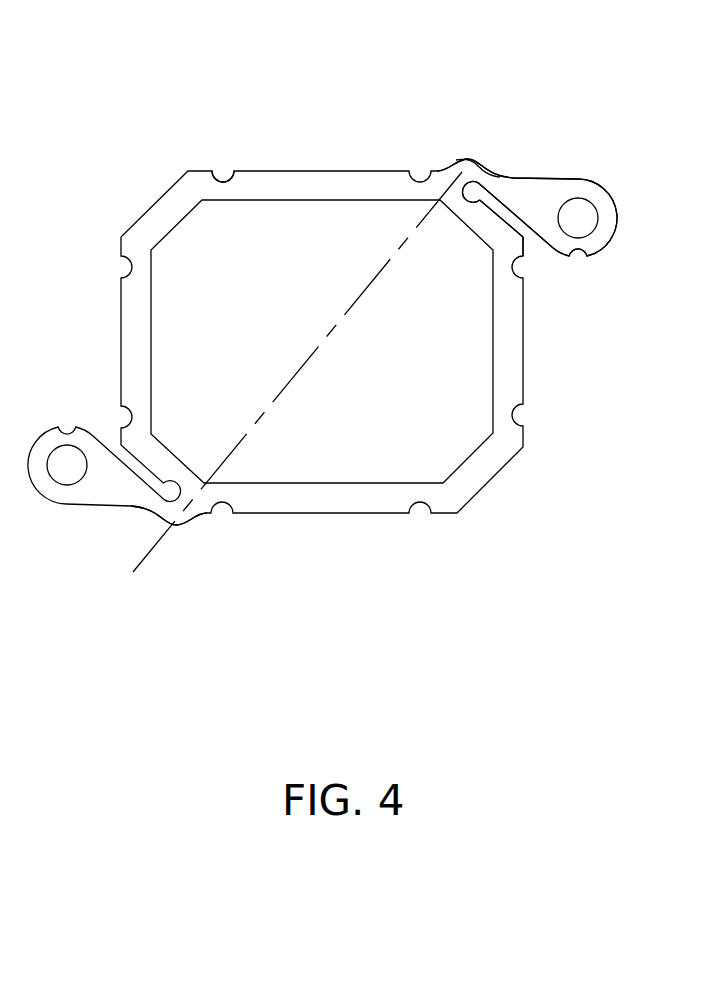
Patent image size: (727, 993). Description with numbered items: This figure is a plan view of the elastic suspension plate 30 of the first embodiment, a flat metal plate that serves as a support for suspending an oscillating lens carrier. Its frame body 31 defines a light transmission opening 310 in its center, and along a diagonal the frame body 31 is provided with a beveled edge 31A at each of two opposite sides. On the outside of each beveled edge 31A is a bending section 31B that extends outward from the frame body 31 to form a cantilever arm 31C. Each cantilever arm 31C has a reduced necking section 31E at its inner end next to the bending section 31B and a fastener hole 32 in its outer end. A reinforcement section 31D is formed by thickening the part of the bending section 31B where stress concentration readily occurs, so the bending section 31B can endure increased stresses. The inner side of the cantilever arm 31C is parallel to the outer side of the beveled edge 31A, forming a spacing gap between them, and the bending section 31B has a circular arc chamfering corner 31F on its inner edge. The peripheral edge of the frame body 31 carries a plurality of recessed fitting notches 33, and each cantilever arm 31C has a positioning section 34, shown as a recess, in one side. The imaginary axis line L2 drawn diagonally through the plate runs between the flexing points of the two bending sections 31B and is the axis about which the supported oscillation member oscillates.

The elastic suspension plate 30 is at (367, 115).
The frame body 31 is at (308, 185).
The light transmission opening 310 is at (350, 453).
The beveled edge 31A is at (480, 228).
The bending section 31B is at (452, 168).
The cantilever arm 31C is at (533, 178).
The reinforcement section 31D is at (476, 165).
The reduced necking section 31E is at (492, 175).
The circular arc chamfering corner 31F is at (475, 202).
The fastener hole 32 is at (588, 213).
The fitting notch 33 is at (225, 172).
The positioning section 34 is at (577, 257).
The imaginary axis line L2 is at (148, 553).